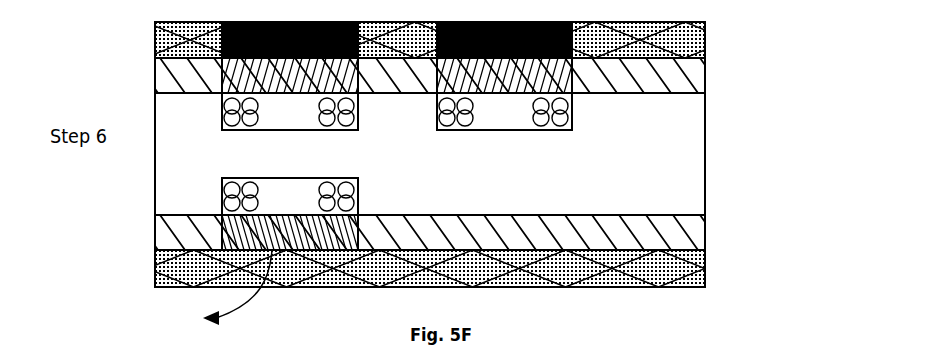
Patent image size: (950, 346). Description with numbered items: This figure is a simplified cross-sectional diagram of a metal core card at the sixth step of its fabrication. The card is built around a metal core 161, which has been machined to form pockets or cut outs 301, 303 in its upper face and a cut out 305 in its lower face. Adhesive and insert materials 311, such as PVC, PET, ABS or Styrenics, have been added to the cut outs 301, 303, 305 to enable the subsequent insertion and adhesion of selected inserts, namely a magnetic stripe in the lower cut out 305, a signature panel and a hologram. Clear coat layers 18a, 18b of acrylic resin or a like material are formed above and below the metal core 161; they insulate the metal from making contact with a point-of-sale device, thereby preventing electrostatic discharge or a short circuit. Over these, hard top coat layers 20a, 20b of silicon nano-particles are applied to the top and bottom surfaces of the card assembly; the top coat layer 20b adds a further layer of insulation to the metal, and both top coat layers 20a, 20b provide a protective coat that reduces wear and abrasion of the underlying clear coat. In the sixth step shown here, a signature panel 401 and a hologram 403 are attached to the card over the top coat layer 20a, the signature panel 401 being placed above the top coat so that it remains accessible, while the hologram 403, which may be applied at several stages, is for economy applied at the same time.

The top coat layer 20a is at (708, 41).
The clear coat layer 18a is at (708, 82).
The metal core 161 is at (708, 160).
The clear coat layer 18b is at (708, 233).
The top coat layer 20b is at (708, 272).
The signature panel 401 is at (290, 40).
The hologram 403 is at (504, 40).
The cut out 301 is at (290, 75).
The cut out 303 is at (504, 75).
The insert materials 311 is at (397, 154).
The cut out 305 is at (200, 272).